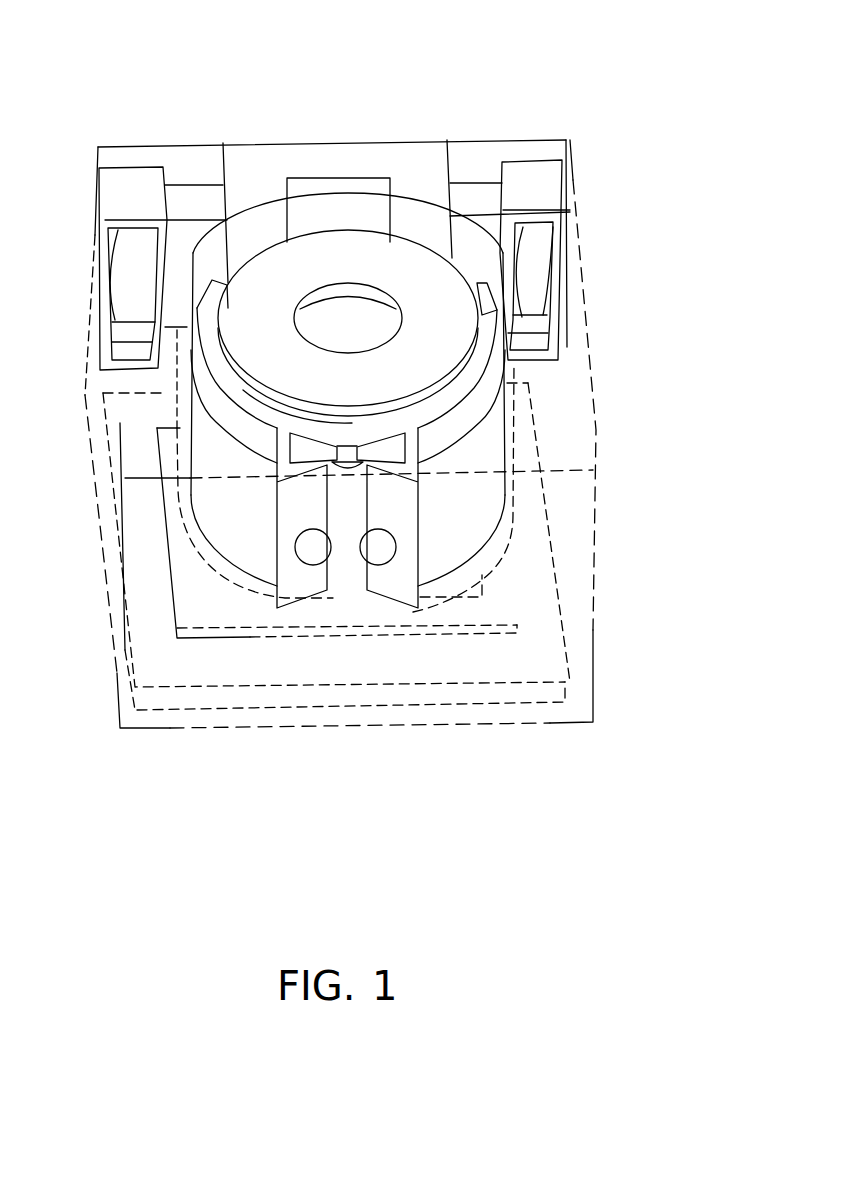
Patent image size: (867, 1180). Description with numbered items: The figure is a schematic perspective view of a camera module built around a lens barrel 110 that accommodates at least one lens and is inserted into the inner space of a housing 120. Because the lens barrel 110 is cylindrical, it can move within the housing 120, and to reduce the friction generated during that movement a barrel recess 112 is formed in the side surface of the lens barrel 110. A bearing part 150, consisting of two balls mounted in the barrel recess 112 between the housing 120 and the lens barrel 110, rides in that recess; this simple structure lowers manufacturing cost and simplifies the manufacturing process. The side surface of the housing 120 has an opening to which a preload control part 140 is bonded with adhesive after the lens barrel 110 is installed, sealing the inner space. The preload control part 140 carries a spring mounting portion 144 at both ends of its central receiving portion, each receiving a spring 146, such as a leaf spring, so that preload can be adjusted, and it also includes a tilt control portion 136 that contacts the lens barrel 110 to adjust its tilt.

The lens barrel 110 is at (352, 257).
The barrel recess 112 is at (420, 556).
The housing 120 is at (138, 745).
The tilt control portion 136 is at (410, 217).
The preload control part 140 is at (268, 145).
The spring mounting portion 144 is at (512, 258).
The springs 146 is at (540, 258).
The bearing part 150 is at (377, 548).